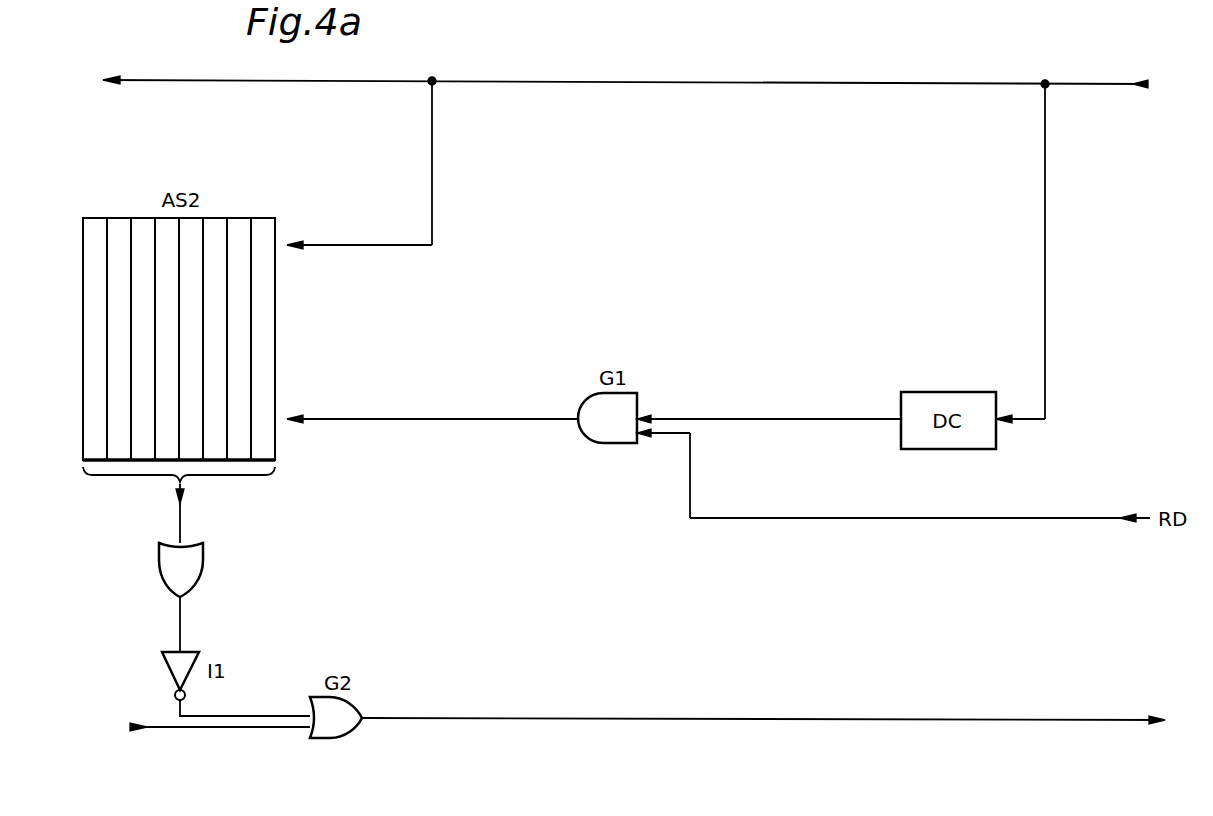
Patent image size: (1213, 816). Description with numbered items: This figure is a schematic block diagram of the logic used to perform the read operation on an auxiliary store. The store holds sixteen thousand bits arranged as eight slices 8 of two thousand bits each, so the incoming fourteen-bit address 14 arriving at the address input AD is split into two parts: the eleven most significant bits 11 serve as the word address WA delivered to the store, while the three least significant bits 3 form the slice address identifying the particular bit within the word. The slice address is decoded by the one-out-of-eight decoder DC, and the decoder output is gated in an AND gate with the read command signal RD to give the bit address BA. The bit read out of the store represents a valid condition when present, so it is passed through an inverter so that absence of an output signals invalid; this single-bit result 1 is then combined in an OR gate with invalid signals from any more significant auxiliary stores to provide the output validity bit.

The most significant bits 11 is at (183, 90).
The bit address 14 is at (1087, 93).
The least significant bits 3 is at (1037, 123).
The slices 8 is at (860, 428).
The 1-bit signal line 1 is at (173, 623).